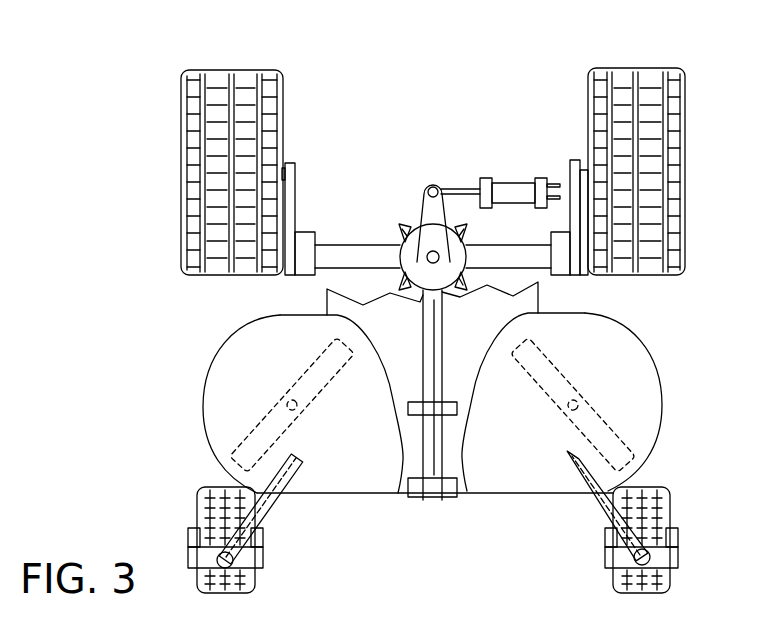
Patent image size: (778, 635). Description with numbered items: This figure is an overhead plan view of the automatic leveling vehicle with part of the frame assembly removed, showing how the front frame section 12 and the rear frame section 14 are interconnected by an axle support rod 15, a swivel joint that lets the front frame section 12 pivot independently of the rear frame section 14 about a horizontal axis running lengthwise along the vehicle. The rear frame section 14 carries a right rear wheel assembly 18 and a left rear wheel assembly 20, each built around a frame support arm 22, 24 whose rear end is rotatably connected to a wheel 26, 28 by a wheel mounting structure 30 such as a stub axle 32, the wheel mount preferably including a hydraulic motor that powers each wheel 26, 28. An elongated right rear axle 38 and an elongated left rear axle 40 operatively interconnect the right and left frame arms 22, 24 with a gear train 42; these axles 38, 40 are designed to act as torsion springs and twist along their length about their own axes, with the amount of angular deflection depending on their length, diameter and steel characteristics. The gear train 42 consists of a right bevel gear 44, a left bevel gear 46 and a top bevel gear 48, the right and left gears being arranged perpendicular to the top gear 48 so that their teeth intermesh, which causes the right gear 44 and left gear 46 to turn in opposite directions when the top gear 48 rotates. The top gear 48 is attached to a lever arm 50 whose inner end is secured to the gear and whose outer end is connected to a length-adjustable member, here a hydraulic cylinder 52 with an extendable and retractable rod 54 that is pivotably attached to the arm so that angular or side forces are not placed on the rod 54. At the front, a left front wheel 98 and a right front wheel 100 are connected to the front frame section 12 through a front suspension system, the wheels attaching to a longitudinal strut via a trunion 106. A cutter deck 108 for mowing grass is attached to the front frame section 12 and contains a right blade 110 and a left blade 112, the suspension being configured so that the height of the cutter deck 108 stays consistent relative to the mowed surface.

The front frame section 12 is at (350, 472).
The rear frame section 14 is at (185, 143).
The axle support rod 15 is at (436, 450).
The right rear wheel assembly 18 is at (203, 53).
The left rear wheel assembly 20 is at (666, 137).
The frame support arm 22 is at (291, 163).
The frame support arm 24 is at (572, 162).
The wheel 26 is at (185, 207).
The wheel 28 is at (688, 198).
The wheel mounting structure 30 is at (436, 156).
The stub axle 32 is at (287, 163).
The right rear axle 38 is at (343, 256).
The left rear axle 40 is at (523, 259).
The gear train 42 is at (465, 182).
The right bevel gear 44 is at (401, 228).
The left bevel gear 46 is at (467, 234).
The top bevel gear 48 is at (418, 225).
The lever arm 50 is at (423, 220).
The hydraulic cylinder 52 is at (486, 178).
The rod 54 is at (458, 188).
The left front wheel 98 is at (245, 578).
The right front wheel 100 is at (613, 578).
The trunion 106 is at (268, 515).
The cutter deck 108 is at (398, 483).
The right blade 110 is at (268, 407).
The left blade 112 is at (610, 410).